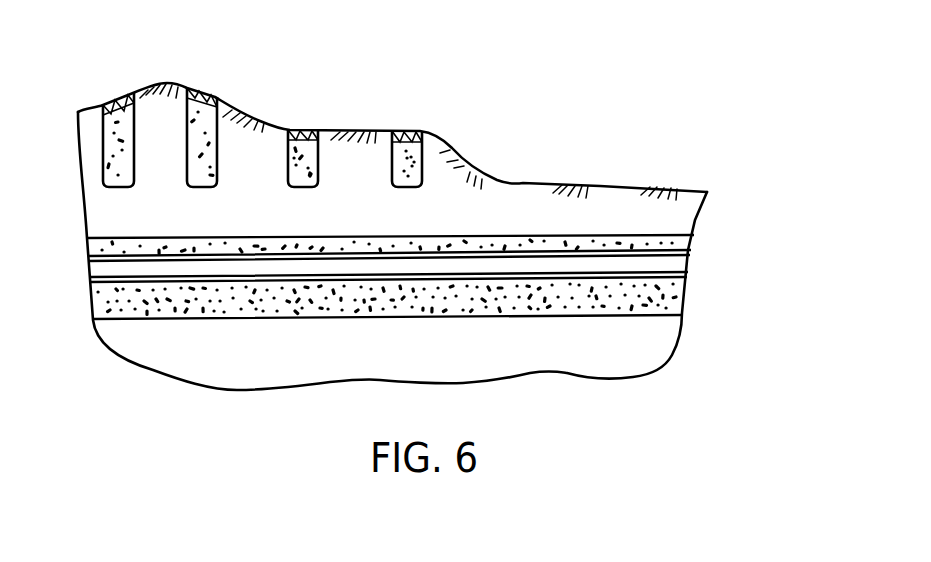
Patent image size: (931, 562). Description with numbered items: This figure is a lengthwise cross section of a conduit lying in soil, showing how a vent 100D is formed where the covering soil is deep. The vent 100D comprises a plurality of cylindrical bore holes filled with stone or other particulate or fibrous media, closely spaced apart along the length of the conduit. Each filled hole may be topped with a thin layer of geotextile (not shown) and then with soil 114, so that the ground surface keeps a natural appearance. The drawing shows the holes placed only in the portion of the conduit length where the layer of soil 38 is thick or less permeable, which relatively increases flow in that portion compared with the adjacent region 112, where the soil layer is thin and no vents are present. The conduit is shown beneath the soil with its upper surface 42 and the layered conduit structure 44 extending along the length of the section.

The layer of soil 38 is at (268, 196).
The top surface 42 is at (522, 183).
The layered stack 44 is at (710, 287).
The region 112 is at (622, 215).
The soil 114 is at (115, 100).
The vent 100D is at (292, 158).